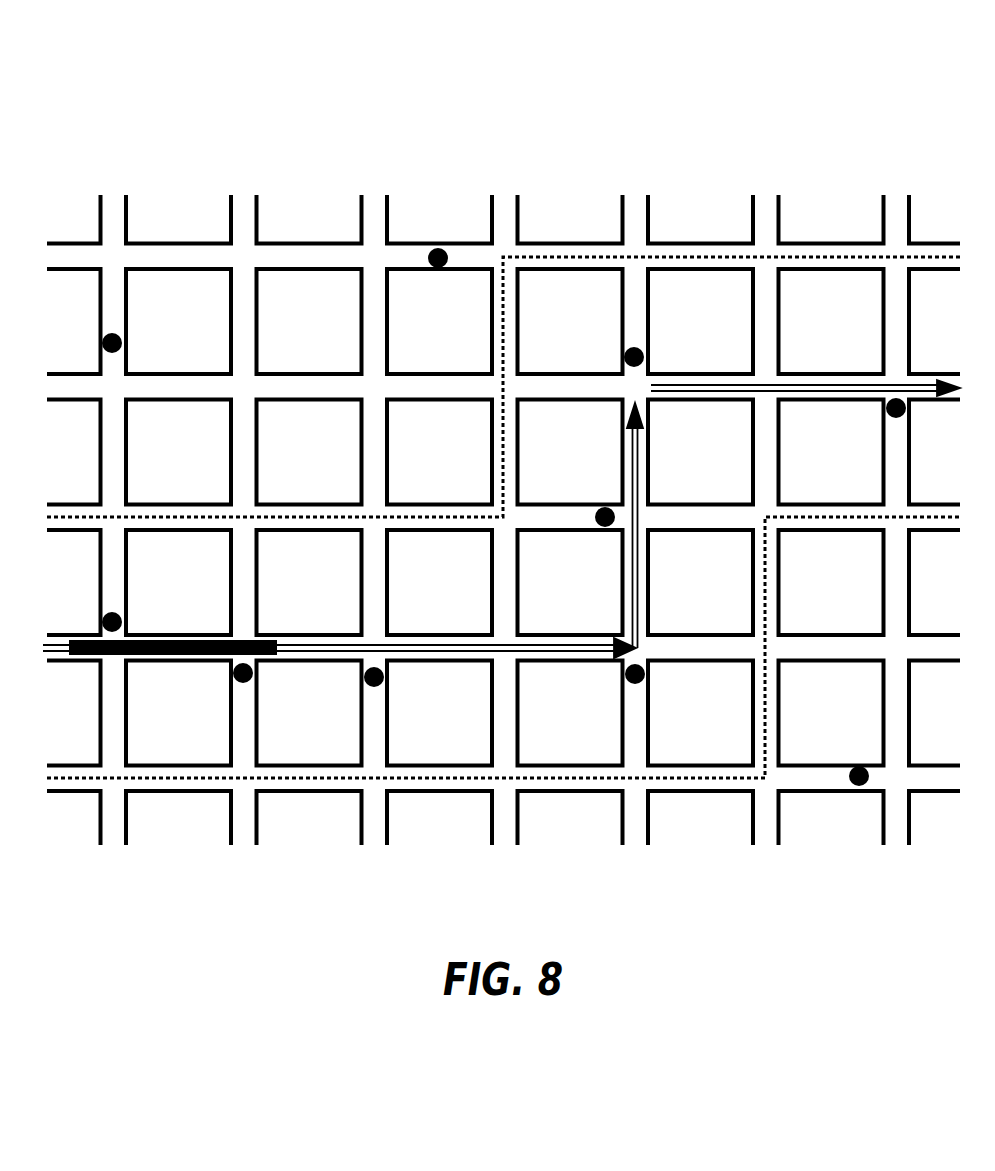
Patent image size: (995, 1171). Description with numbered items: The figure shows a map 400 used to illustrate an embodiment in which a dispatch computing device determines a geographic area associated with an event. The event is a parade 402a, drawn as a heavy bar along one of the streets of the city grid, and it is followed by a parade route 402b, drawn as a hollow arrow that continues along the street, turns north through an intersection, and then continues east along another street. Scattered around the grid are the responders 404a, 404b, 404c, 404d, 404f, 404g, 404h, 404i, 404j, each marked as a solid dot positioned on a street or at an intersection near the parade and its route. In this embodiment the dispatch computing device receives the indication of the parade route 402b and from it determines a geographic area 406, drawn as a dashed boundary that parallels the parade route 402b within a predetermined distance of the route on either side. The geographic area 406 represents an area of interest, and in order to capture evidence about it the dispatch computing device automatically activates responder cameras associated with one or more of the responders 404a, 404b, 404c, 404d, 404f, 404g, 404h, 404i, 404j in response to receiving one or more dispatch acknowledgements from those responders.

The map 400 is at (835, 77).
The parade 402a is at (197, 657).
The parade route 402b is at (835, 384).
The responder 404a is at (122, 622).
The responder 404b is at (253, 675).
The responder 404c is at (384, 677).
The responder 404d is at (645, 674).
The responder 404f is at (624, 357).
The responder 404g is at (888, 412).
The responder 404h is at (122, 343).
The responder 404i is at (438, 248).
The responder 404j is at (856, 766).
The geographic area 406 is at (830, 253).